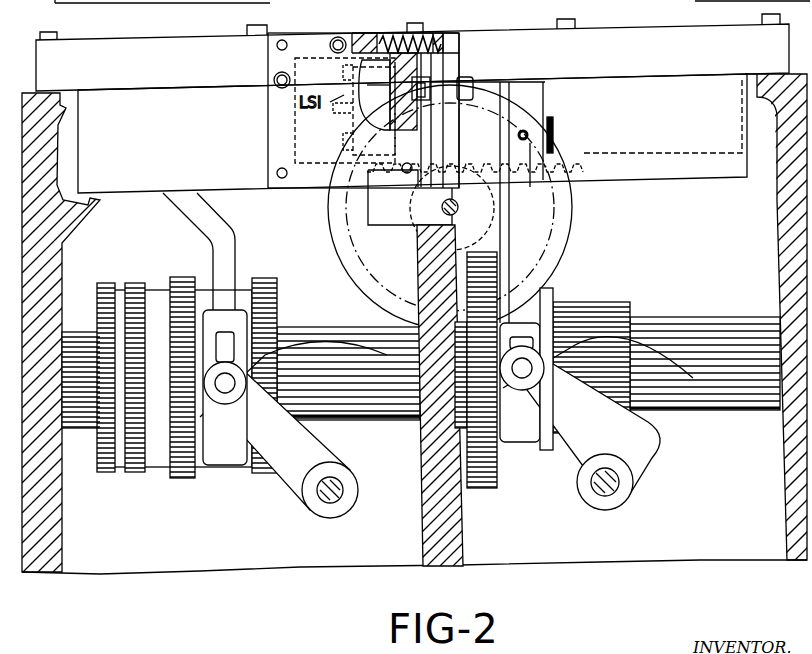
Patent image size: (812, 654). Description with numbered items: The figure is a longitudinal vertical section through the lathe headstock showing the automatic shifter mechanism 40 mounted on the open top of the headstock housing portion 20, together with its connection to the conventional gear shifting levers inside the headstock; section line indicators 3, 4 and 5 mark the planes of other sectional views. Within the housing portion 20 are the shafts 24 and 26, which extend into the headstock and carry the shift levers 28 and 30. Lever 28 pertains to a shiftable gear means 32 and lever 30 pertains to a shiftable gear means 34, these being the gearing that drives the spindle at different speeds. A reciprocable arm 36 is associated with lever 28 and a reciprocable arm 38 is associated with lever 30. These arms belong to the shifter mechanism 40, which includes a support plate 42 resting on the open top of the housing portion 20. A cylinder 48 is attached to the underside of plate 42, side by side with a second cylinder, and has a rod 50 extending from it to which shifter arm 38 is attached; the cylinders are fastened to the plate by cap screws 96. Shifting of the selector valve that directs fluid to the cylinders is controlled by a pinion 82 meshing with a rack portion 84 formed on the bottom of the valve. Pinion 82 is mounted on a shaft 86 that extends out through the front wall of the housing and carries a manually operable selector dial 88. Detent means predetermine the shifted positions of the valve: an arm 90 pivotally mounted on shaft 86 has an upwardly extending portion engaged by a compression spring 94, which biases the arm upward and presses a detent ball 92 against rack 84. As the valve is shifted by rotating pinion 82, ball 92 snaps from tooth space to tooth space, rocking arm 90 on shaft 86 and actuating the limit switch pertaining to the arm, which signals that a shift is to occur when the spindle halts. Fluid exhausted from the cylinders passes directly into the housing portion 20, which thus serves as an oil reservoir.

The housing portion 20 is at (787, 257).
The shaft 24 is at (342, 500).
The shaft 26 is at (605, 493).
The shift lever 28 is at (318, 462).
The shift lever 30 is at (657, 446).
The shiftable gear means 32 is at (222, 472).
The shiftable gear means 34 is at (546, 458).
The reciprocable arm 36 is at (226, 242).
The reciprocable arm 38 is at (536, 245).
The automatic shifter mechanism 40 is at (619, 4).
The support plate 42 is at (198, 50).
The cylinder 48 is at (487, 100).
The rod 50 is at (556, 134).
The pinion 82 is at (515, 203).
The rack portion 84 is at (584, 168).
The shaft 86 is at (413, 213).
The selector dial 88 is at (561, 265).
The arm 90 is at (452, 68).
The detent ball 92 is at (340, 222).
The compression spring 94 is at (390, 33).
The cap screws 96 is at (55, 20).
The section line 3- 3 is at (740, 463).
The section line 4- 4 is at (108, 513).
The section line 5- 5 is at (758, 145).